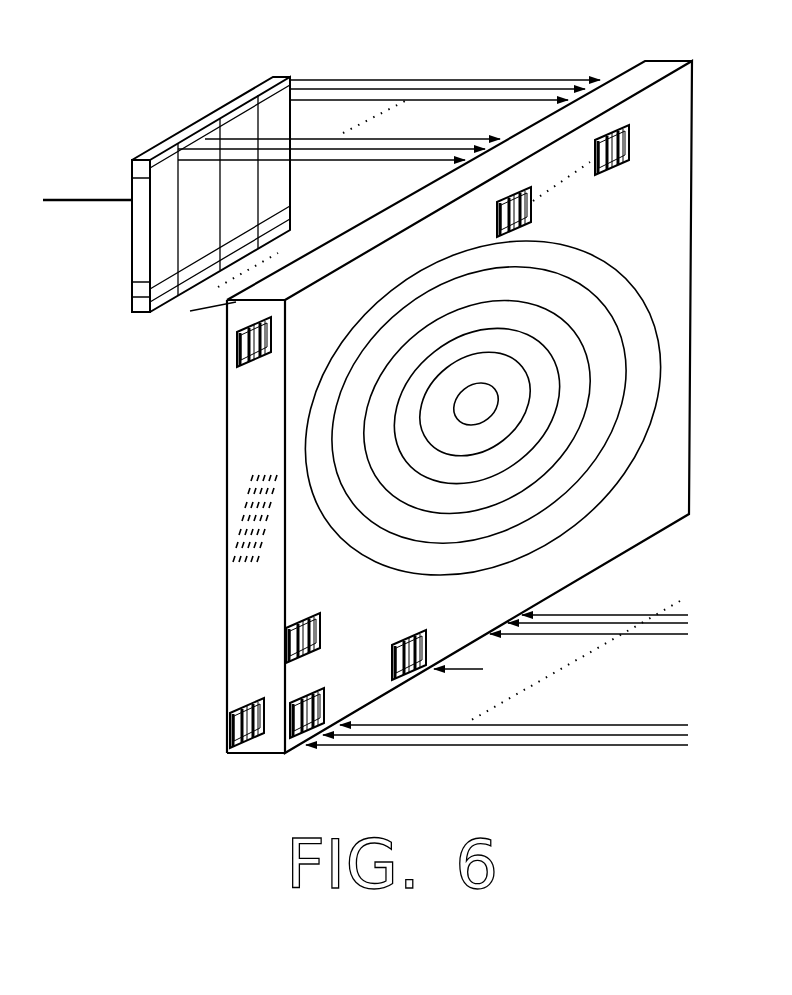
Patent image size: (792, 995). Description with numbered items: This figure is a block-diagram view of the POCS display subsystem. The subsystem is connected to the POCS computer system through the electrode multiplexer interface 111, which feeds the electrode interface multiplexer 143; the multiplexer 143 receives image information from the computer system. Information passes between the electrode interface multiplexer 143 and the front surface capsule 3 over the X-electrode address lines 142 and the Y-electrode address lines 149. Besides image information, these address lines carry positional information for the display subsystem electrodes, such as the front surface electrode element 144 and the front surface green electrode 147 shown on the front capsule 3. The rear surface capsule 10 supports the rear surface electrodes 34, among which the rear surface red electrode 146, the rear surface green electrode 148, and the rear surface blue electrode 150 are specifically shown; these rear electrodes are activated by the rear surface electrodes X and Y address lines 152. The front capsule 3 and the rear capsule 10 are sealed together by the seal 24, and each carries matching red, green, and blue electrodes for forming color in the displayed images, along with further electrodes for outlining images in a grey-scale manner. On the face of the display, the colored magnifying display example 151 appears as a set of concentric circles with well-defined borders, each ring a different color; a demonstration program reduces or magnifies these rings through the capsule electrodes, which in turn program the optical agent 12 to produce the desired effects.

The front surface capsule 3 is at (627, 72).
The rear surface capsule 10 is at (613, 552).
The optical agent 12 is at (247, 525).
The seal 24 is at (617, 93).
The rear surface electrodes 34 is at (562, 182).
The electrode multiplexer interface 111 is at (72, 183).
The X-electrode address lines 142 is at (189, 299).
The electrode interface multiplexer 143 is at (256, 97).
The front surface electrode element 144 is at (255, 357).
The rear surface red electrode 146 is at (303, 613).
The front surface green electrode 147 is at (243, 707).
The rear surface green electrode 148 is at (307, 710).
The Y-electrode address lines 149 is at (380, 110).
The rear surface blue electrode 150 is at (419, 628).
The colored magnifying display example 151 is at (457, 412).
The rear surface electrodes X and Y address lines 152 is at (537, 677).